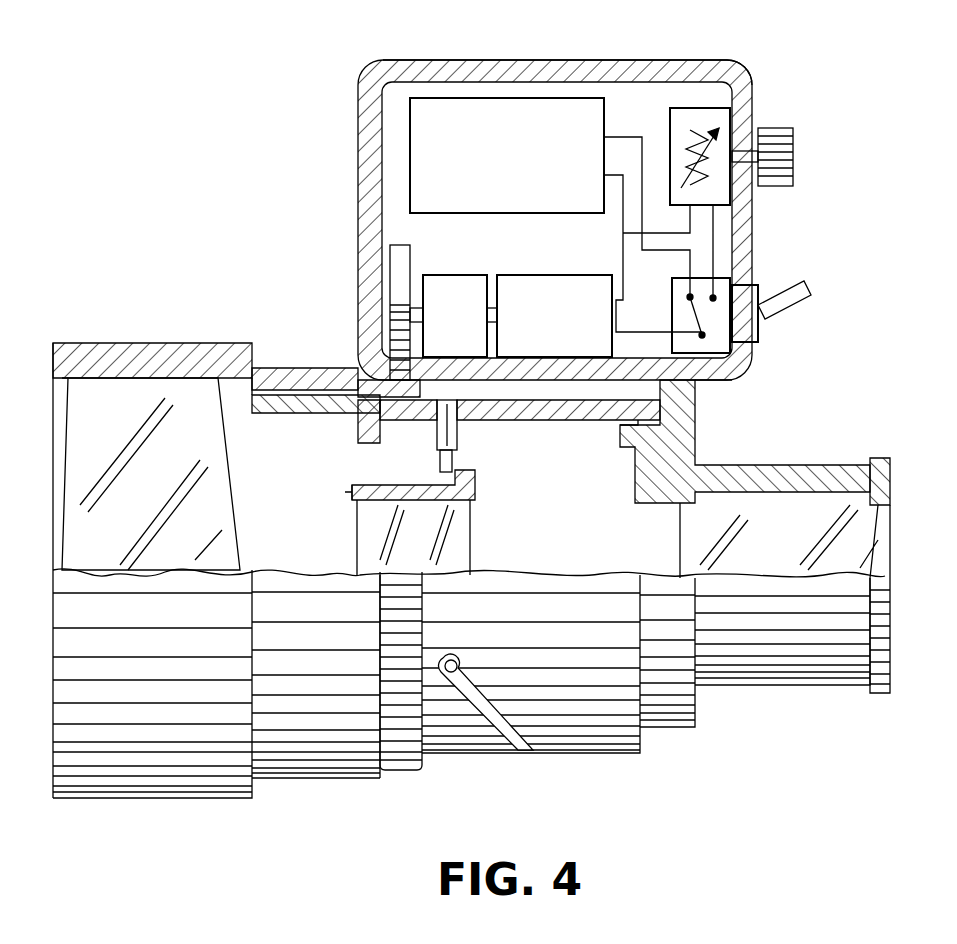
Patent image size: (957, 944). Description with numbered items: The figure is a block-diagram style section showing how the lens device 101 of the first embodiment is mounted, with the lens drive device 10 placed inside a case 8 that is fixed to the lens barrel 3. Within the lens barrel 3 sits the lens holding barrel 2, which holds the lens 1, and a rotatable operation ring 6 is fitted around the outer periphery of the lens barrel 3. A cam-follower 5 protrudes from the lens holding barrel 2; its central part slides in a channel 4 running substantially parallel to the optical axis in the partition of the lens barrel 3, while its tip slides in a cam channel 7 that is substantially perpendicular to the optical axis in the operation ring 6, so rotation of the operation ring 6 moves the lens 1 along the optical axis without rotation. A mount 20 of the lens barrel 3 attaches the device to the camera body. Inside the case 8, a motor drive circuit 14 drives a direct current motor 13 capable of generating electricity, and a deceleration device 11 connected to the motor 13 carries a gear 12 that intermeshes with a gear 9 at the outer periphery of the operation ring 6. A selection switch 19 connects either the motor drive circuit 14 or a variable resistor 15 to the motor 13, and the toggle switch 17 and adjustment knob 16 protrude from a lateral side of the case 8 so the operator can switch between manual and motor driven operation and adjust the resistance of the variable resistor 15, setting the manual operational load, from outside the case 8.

The shift control device 101 is at (74, 262).
The lens 1 is at (452, 522).
The lens holding barrel 2 is at (350, 487).
The lens barrel 3 is at (289, 366).
The channel 4 is at (600, 435).
The cam-follower 5 is at (435, 428).
The operation ring 6 is at (505, 405).
The cam channel 7 is at (470, 420).
The case 8 is at (462, 59).
The gear 9 is at (402, 771).
The lens drive device 10 is at (347, 213).
The deceleration device 11 is at (398, 236).
The gear 12 is at (410, 258).
The direct current motor 13 is at (566, 308).
The motor drive circuit 14 is at (516, 178).
The variable resistor 15 is at (672, 122).
The adjustment knob 16 is at (775, 128).
The toggle switch 17 is at (762, 292).
The selection switch 19 is at (678, 312).
The mount 20 is at (880, 696).